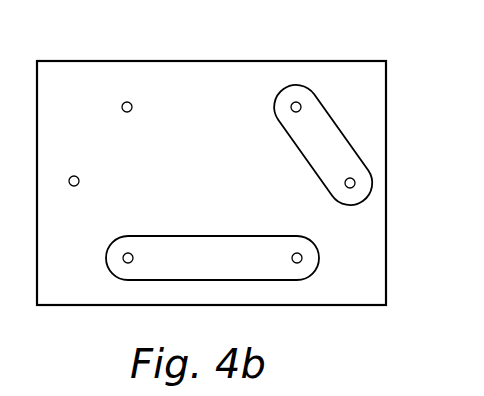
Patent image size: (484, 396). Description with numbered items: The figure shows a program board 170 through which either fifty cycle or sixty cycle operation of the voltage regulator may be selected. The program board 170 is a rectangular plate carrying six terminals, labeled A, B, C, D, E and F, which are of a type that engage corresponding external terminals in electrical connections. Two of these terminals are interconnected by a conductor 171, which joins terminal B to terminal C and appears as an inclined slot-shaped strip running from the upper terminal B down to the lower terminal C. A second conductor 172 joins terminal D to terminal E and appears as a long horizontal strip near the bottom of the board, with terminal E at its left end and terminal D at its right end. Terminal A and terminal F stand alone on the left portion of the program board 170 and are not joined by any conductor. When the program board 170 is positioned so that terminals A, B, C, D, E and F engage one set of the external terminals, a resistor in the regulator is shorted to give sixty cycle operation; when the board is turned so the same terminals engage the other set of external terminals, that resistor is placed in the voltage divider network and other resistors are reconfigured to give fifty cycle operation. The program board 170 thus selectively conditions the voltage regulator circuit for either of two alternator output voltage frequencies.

The program board 170 is at (349, 76).
The conductor 171 is at (300, 150).
The conductor 172 is at (186, 249).
The terminal A is at (131, 111).
The terminal B is at (290, 105).
The terminal C is at (346, 187).
The terminal D is at (302, 254).
The terminal E is at (123, 256).
The terminal F is at (73, 176).